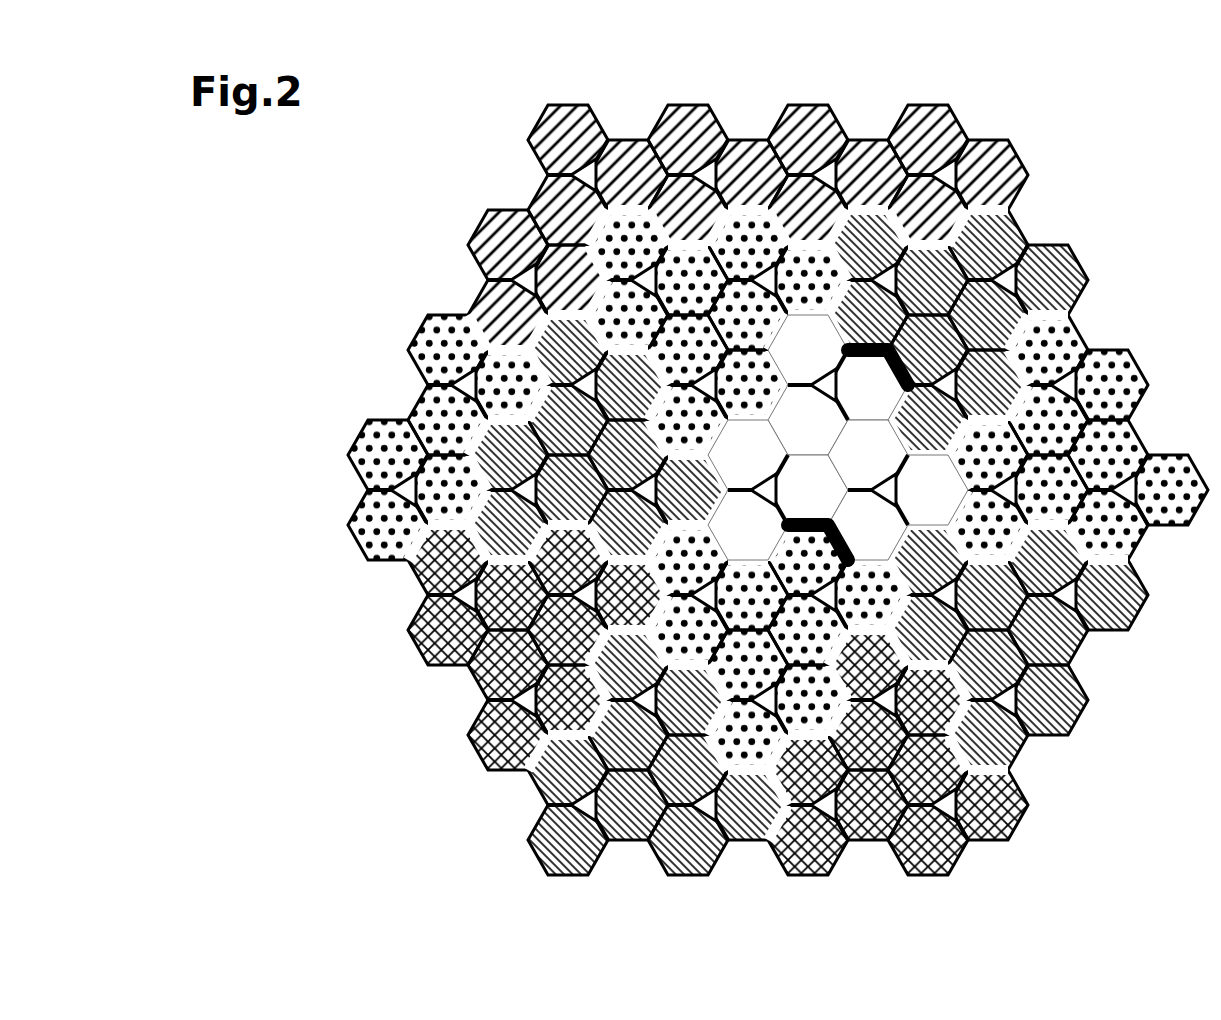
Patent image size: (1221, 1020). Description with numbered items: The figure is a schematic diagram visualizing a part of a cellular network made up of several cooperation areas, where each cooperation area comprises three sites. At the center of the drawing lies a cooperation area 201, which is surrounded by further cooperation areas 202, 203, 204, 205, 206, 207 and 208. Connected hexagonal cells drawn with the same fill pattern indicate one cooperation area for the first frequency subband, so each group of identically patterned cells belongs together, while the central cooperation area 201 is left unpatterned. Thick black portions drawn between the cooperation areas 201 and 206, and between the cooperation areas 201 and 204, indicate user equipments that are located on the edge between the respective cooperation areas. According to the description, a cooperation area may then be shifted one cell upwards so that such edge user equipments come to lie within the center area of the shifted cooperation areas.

The cooperation area 201 is at (850, 469).
The surrounding cooperation area 202 is at (740, 336).
The surrounding cooperation area 203 is at (614, 469).
The surrounding cooperation area 204 is at (975, 336).
The surrounding cooperation area 205 is at (544, 653).
The surrounding cooperation area 206 is at (800, 653).
The surrounding cooperation area 207 is at (1033, 653).
The surrounding cooperation area 208 is at (1092, 469).